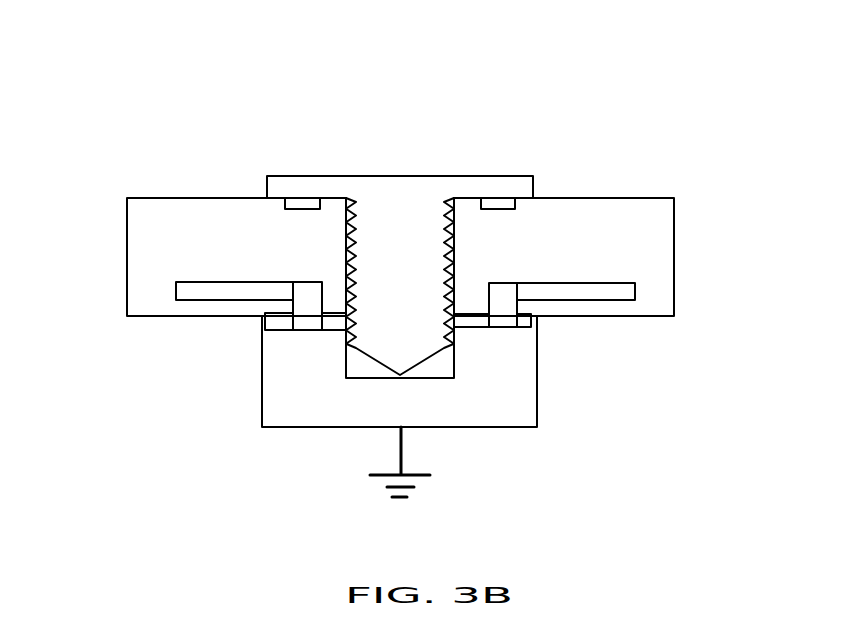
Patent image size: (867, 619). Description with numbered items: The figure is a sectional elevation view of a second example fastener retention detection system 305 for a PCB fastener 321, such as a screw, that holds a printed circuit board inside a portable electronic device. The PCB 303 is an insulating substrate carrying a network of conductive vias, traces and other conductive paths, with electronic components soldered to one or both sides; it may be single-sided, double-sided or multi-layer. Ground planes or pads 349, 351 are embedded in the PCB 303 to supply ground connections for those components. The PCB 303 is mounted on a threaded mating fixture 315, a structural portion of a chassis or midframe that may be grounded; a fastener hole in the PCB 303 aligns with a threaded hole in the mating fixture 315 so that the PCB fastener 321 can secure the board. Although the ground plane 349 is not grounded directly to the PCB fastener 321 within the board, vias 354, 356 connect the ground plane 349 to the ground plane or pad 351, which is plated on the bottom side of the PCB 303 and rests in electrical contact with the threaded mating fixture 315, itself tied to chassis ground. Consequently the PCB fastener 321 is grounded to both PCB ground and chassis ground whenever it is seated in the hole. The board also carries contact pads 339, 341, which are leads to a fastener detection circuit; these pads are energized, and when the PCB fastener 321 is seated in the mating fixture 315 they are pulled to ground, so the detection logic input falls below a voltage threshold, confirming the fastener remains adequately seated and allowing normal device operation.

The fastener retention detection system 305 is at (387, 260).
The PCB 303 is at (285, 259).
The PCB fastener 321 is at (422, 282).
The threaded mating fixture 315 is at (327, 409).
The contact pad 339 is at (298, 203).
The contact pad 341 is at (507, 203).
The ground plane 349 is at (220, 292).
The ground plane or pad 351 is at (468, 322).
The via 354 is at (305, 300).
The via 356 is at (505, 307).